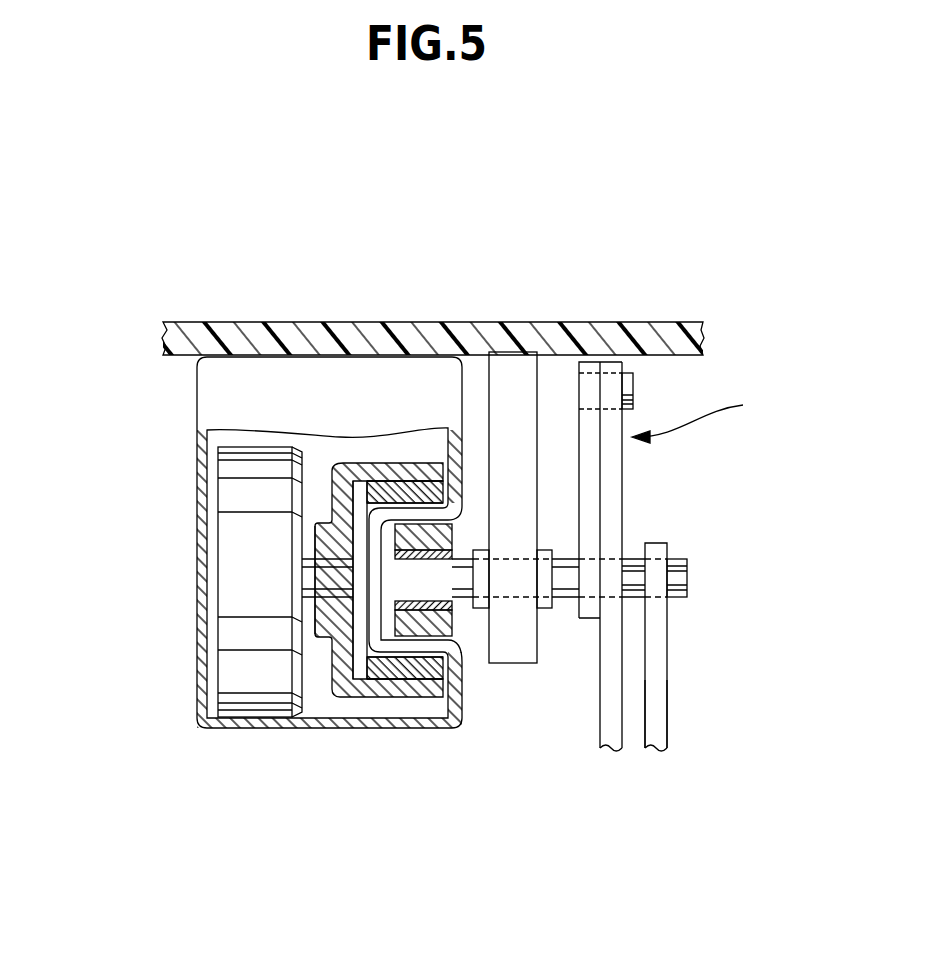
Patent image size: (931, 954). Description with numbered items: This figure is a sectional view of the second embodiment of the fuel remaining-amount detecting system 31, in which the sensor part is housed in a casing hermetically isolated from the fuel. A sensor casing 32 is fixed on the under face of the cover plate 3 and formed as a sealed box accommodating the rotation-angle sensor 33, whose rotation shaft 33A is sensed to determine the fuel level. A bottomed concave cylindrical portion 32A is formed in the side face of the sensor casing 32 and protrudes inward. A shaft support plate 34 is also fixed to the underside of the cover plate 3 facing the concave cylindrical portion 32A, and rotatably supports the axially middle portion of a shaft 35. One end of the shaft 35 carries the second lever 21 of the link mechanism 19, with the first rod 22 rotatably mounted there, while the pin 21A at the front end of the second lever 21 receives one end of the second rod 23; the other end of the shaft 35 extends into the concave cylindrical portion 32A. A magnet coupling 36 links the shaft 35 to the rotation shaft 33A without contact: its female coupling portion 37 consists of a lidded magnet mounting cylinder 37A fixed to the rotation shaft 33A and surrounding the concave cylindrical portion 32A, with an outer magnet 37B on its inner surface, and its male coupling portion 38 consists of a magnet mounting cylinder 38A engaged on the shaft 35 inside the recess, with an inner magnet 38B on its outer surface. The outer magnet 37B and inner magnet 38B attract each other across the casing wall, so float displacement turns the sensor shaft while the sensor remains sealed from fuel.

The cover plate 3 is at (236, 338).
The link mechanism 19 is at (658, 638).
The second lever 21 is at (585, 378).
The pin 21A is at (632, 392).
The first rod 22 is at (658, 708).
The second rod 23 is at (610, 493).
The fuel remaining-amount detecting system 31 is at (783, 414).
The sensor casing 32 is at (218, 402).
The concave cylindrical portion 32A is at (388, 548).
The rotation-angle sensor 33 is at (242, 478).
The rotation shaft 33A is at (320, 580).
The shaft support plate 34 is at (513, 382).
The shaft 35 is at (677, 573).
The magnet coupling 36 is at (313, 620).
The female coupling portion 37 is at (385, 703).
The magnet mounting cylinder 37A is at (362, 692).
The outer magnet 37B is at (415, 668).
The male coupling portion 38 is at (415, 505).
The magnet mounting cylinder 38A is at (430, 522).
The inner magnet 38B is at (390, 472).